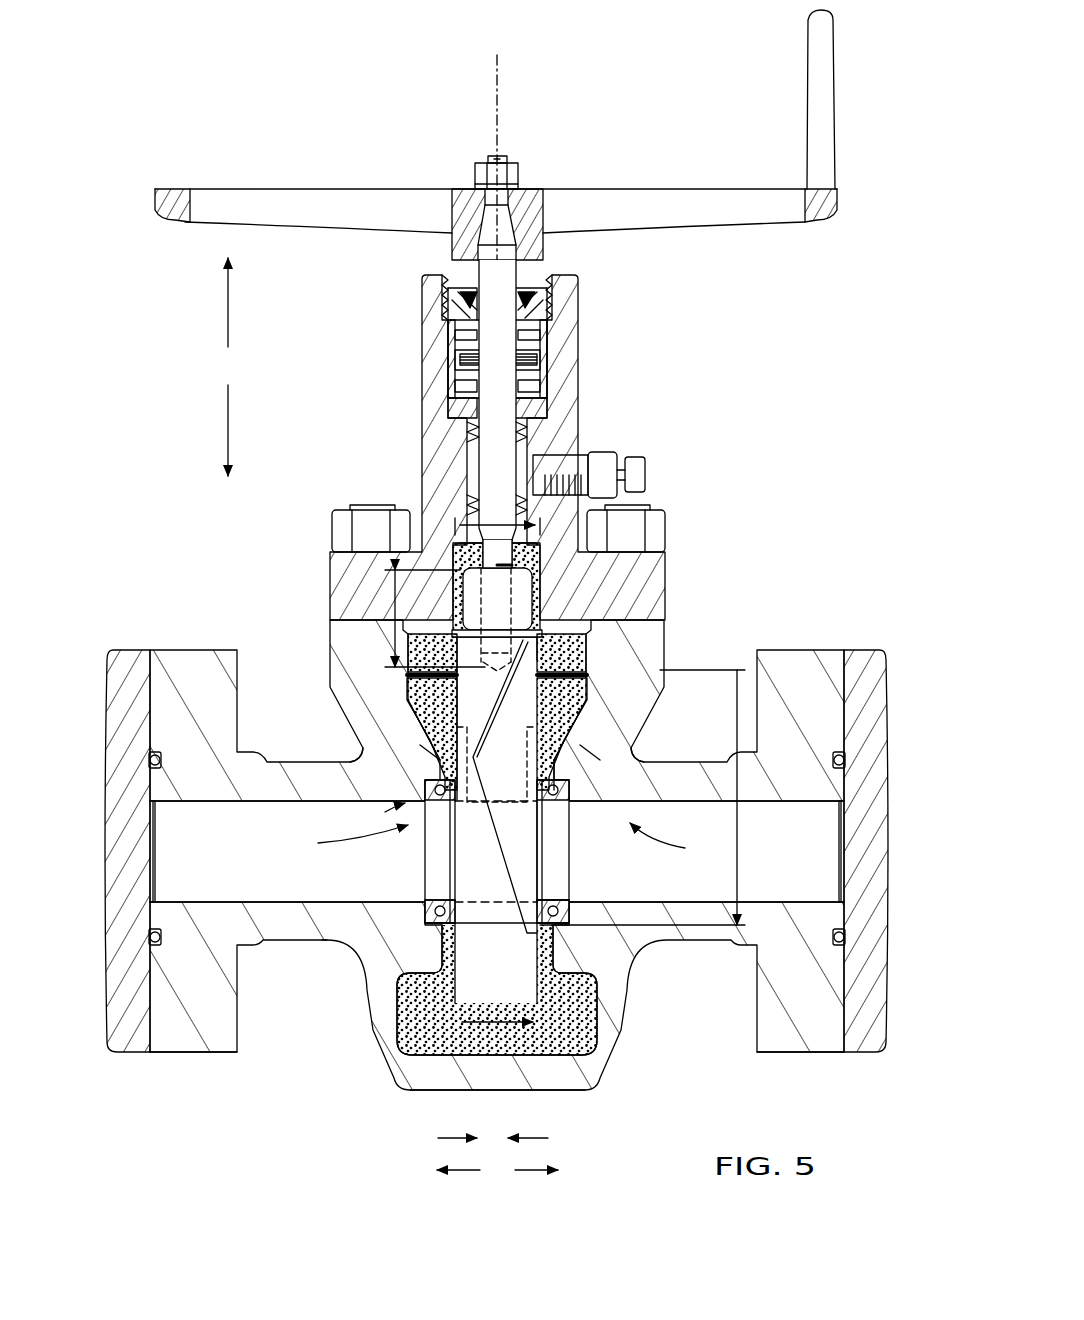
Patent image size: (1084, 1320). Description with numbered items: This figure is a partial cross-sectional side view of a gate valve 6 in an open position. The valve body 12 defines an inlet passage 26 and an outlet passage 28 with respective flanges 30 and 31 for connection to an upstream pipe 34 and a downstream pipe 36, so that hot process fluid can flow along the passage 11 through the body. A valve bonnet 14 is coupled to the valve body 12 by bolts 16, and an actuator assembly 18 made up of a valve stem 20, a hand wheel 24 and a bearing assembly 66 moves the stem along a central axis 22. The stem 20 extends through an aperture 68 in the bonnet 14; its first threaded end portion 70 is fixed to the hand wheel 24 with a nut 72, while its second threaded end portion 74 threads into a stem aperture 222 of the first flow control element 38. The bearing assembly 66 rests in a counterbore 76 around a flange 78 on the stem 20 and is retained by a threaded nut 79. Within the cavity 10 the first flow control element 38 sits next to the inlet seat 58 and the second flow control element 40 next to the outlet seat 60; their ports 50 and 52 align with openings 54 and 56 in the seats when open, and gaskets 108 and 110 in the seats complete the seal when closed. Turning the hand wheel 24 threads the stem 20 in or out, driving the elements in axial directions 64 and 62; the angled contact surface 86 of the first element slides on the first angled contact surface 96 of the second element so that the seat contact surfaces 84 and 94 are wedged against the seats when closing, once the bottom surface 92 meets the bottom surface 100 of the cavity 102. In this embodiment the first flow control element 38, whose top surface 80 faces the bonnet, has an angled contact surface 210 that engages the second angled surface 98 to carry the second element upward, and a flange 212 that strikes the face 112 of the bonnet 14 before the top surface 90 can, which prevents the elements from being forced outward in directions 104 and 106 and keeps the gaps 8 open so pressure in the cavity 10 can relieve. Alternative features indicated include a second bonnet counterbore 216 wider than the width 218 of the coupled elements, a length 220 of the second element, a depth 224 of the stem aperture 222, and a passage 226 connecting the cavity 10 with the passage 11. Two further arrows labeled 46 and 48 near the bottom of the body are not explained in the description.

The gate valve 6 is at (815, 345).
The gaps 8 is at (533, 790).
The cavity 10 is at (415, 655).
The passage 11 is at (300, 880).
The valve body 12 is at (310, 985).
The valve bonnet 14 is at (612, 313).
The bolts 16 is at (340, 512).
The actuator assembly 18 is at (382, 165).
The valve stem 20 is at (487, 470).
The central axis 22 is at (500, 95).
The hand wheel 24 is at (715, 190).
The inlet passage 26 is at (178, 868).
The outlet passage 28 is at (788, 871).
The flange 30 is at (200, 1055).
The flange 31 is at (775, 1055).
The upstream pipe 34 is at (122, 655).
The downstream pipe 36 is at (850, 655).
The first flow control element 38 is at (349, 841).
The second flow control element 40 is at (673, 843).
The first sealing force 46 is at (445, 1138).
The second sealing force 48 is at (540, 1138).
The port 50 is at (540, 826).
The port 52 is at (455, 920).
The opening 54 is at (440, 857).
The opening 56 is at (565, 855).
The inlet seat 58 is at (420, 775).
The outlet seat 60 is at (620, 785).
The axial direction 62 is at (228, 425).
The axial direction 64 is at (228, 310).
The bearing assembly 66 is at (410, 312).
The aperture 68 is at (525, 436).
The first threaded end portion 70 is at (487, 165).
The nut 72 is at (518, 178).
The second threaded end portion 74 is at (470, 560).
The counterbore 76 is at (450, 362).
The flange 78 is at (528, 366).
The threaded nut 79 is at (545, 300).
The top surface 80 is at (545, 543).
The seat contact surface 84 is at (545, 718).
The angled contact surface 86 is at (484, 722).
The top surface 90 is at (600, 650).
The bottom surface 92 is at (545, 925).
The seat contact surface 94 is at (410, 700).
The first angled contact surface 96 is at (560, 690).
The second angled surface 98 is at (487, 793).
The bottom surface 100 is at (430, 1090).
The cavity 102 is at (415, 1020).
The axial direction 104 is at (460, 1170).
The axial direction 106 is at (533, 1170).
The gasket 108 is at (467, 435).
The gasket 110 is at (560, 910).
The face 112 is at (395, 578).
The angled contact surface 210 is at (475, 850).
The flange 212 is at (517, 612).
The second bonnet counterbore 216 is at (455, 525).
The width 218 is at (598, 470).
The length 220 is at (740, 815).
The stem aperture 222 is at (547, 595).
The depth 224 is at (395, 600).
The passage 226 is at (420, 745).